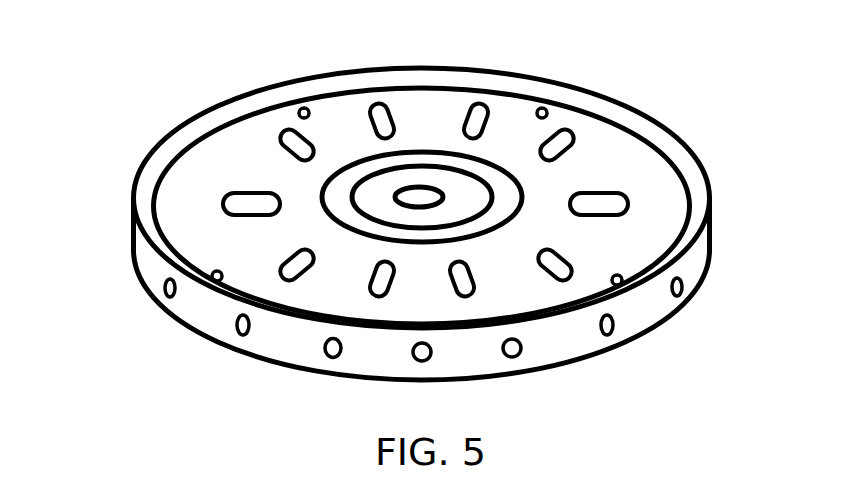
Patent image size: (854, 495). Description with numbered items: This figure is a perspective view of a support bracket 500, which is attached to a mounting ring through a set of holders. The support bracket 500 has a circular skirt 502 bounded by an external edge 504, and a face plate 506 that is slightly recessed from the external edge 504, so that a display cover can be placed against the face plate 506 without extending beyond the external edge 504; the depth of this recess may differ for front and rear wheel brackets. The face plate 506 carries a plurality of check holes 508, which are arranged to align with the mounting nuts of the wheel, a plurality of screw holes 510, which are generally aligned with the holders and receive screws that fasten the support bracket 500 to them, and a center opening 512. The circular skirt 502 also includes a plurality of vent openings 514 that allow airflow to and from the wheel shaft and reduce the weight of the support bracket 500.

The support bracket 500 is at (160, 58).
The circular skirt 502 is at (132, 252).
The external edge 504 is at (682, 138).
The face plate 506 is at (600, 140).
The check holes 508 is at (576, 265).
The screw holes 510 is at (305, 106).
The center opening 512 is at (432, 188).
The vent openings 514 is at (320, 348).